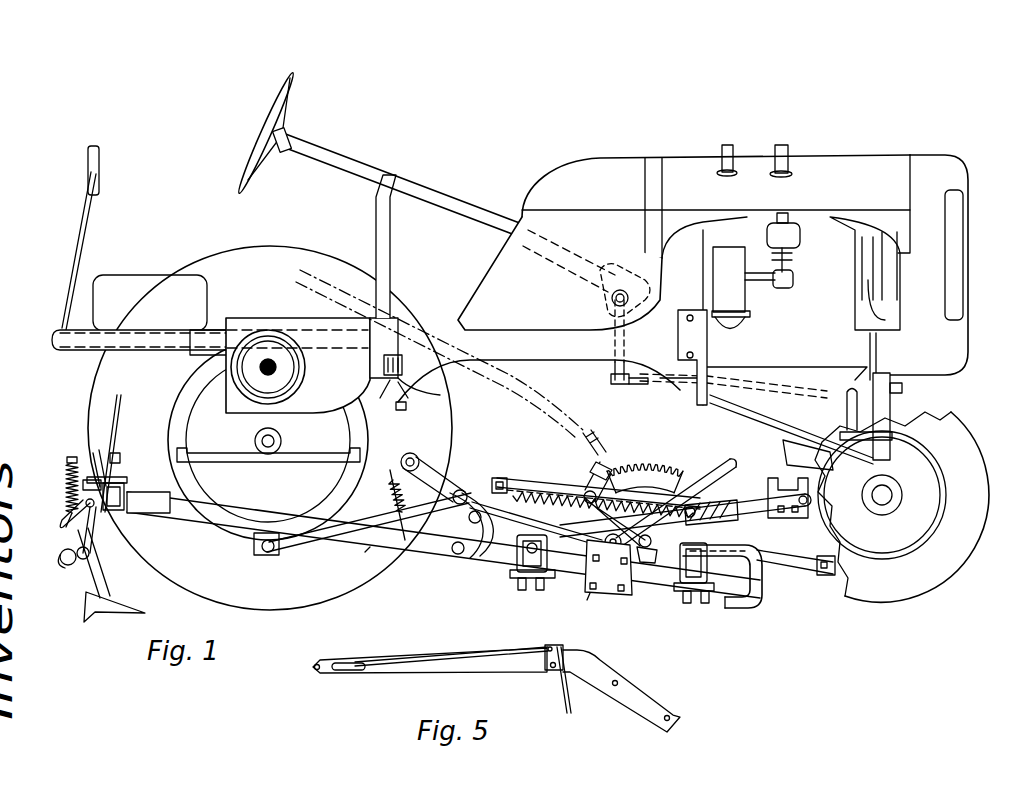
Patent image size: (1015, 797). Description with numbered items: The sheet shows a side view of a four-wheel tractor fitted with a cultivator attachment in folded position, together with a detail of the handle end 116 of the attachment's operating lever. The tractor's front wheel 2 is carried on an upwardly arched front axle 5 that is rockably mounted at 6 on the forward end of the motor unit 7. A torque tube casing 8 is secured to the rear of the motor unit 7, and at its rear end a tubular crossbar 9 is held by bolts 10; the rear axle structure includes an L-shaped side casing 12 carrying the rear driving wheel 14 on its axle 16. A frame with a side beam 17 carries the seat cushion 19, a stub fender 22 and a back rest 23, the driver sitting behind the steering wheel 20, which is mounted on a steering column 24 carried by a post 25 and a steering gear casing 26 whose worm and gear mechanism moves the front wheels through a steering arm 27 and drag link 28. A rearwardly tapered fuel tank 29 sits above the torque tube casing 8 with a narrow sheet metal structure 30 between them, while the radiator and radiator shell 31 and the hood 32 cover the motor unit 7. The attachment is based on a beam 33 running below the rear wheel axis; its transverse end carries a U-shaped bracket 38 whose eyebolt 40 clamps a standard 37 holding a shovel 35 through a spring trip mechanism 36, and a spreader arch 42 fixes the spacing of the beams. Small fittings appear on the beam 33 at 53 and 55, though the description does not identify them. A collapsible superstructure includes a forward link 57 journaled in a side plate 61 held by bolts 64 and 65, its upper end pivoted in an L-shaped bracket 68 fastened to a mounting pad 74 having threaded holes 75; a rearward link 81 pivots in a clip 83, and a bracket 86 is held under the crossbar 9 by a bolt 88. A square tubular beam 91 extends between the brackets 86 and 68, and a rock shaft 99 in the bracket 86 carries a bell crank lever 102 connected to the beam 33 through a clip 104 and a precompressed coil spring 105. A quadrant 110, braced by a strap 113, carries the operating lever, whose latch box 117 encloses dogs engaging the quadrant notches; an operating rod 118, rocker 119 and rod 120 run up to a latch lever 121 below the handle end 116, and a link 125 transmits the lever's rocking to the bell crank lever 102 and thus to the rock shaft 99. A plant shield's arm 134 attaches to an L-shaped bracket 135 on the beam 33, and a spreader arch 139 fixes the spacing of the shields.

In FIG. 1, the front wheel 2 is at (963, 428).
In FIG. 1, the front axle 5 is at (890, 410).
In FIG. 1, the rockable mounting 6 is at (902, 388).
In FIG. 1, the motor unit 7 is at (808, 335).
In FIG. 1, the torque tube casing 8 is at (549, 356).
In FIG. 1, the tubular crossbar 9 is at (402, 362).
In FIG. 1, the bolts 10 is at (412, 396).
In FIG. 1, the side casing 12 is at (190, 433).
In FIG. 1, the rear driving wheel 14 is at (103, 384).
In FIG. 1, the axle 16 is at (280, 440).
In FIG. 1, the side beam 17 is at (335, 342).
In FIG. 1, the seat cushion 19 is at (135, 275).
In FIG. 1, the steering wheel 20 is at (292, 74).
In FIG. 1, the stub fender 22 is at (300, 246).
In FIG. 1, the back rest 23 is at (100, 165).
In FIG. 1, the steering column 24 is at (347, 162).
In FIG. 1, the post 25 is at (391, 250).
In FIG. 1, the steering gear casing 26 is at (608, 296).
In FIG. 1, the steering arm 27 is at (612, 370).
In FIG. 1, the drag link 28 is at (650, 385).
In FIG. 1, the fuel tank 29 is at (597, 165).
In FIG. 1, the sheet metal structure 30 is at (495, 262).
In FIG. 1, the radiator and radiator shell 31 is at (958, 160).
In FIG. 1, the hood 32 is at (850, 163).
In FIG. 1, the beam 33 is at (410, 548).
In FIG. 1, the shovel 35 is at (118, 597).
In FIG. 1, the spring trip mechanism 36 is at (66, 490).
In FIG. 1, the standard 37 is at (90, 465).
In FIG. 1, the U-shaped bracket 38 is at (113, 511).
In FIG. 1, the eyebolt 40 is at (118, 480).
In FIG. 1, the spreader arch 42 is at (121, 408).
In FIG. 1, the U-bracket 53 is at (548, 546).
In FIG. 1, the bolts 55 is at (530, 590).
In FIG. 1, the forward link 57 is at (722, 512).
In FIG. 1, the side plate 61 is at (636, 594).
In FIG. 1, the bolt 64 is at (600, 540).
In FIG. 1, the bolt 65 is at (590, 596).
In FIG. 1, the L-shaped bracket 68 is at (768, 494).
In FIG. 1, the mounting pad 74 is at (678, 338).
In FIG. 1, the threaded holes 75 is at (690, 315).
In FIG. 1, the rearward link 81 is at (310, 533).
In FIG. 1, the clip 83 is at (266, 554).
In FIG. 1, the bracket 86 is at (492, 480).
In FIG. 1, the bolt 88 is at (395, 413).
In FIG. 1, the square tubular beam 91 is at (540, 480).
In FIG. 1, the rock shaft 99 is at (468, 520).
In FIG. 1, the bell crank lever 102 is at (425, 450).
In FIG. 1, the clip 104 is at (368, 556).
In FIG. 1, the coil spring 105 is at (390, 498).
In FIG. 1, the quadrant 110 is at (630, 468).
In FIG. 1, the strap 113 is at (588, 491).
In FIG. 1, the handle end 116 is at (518, 380).
In FIG. 5, the handle end 116 is at (457, 665).
In FIG. 1, the latch box 117 is at (590, 458).
In FIG. 5, the operating rod 118 is at (563, 698).
In FIG. 5, the rocker 119 is at (555, 645).
In FIG. 5, the rod 120 is at (518, 650).
In FIG. 5, the latch lever 121 is at (350, 663).
In FIG. 1, the link 125 is at (540, 520).
In FIG. 1, the arm 134 is at (745, 549).
In FIG. 1, the L-shaped bracket 135 is at (795, 568).
In FIG. 1, the spreader arch 139 is at (727, 465).